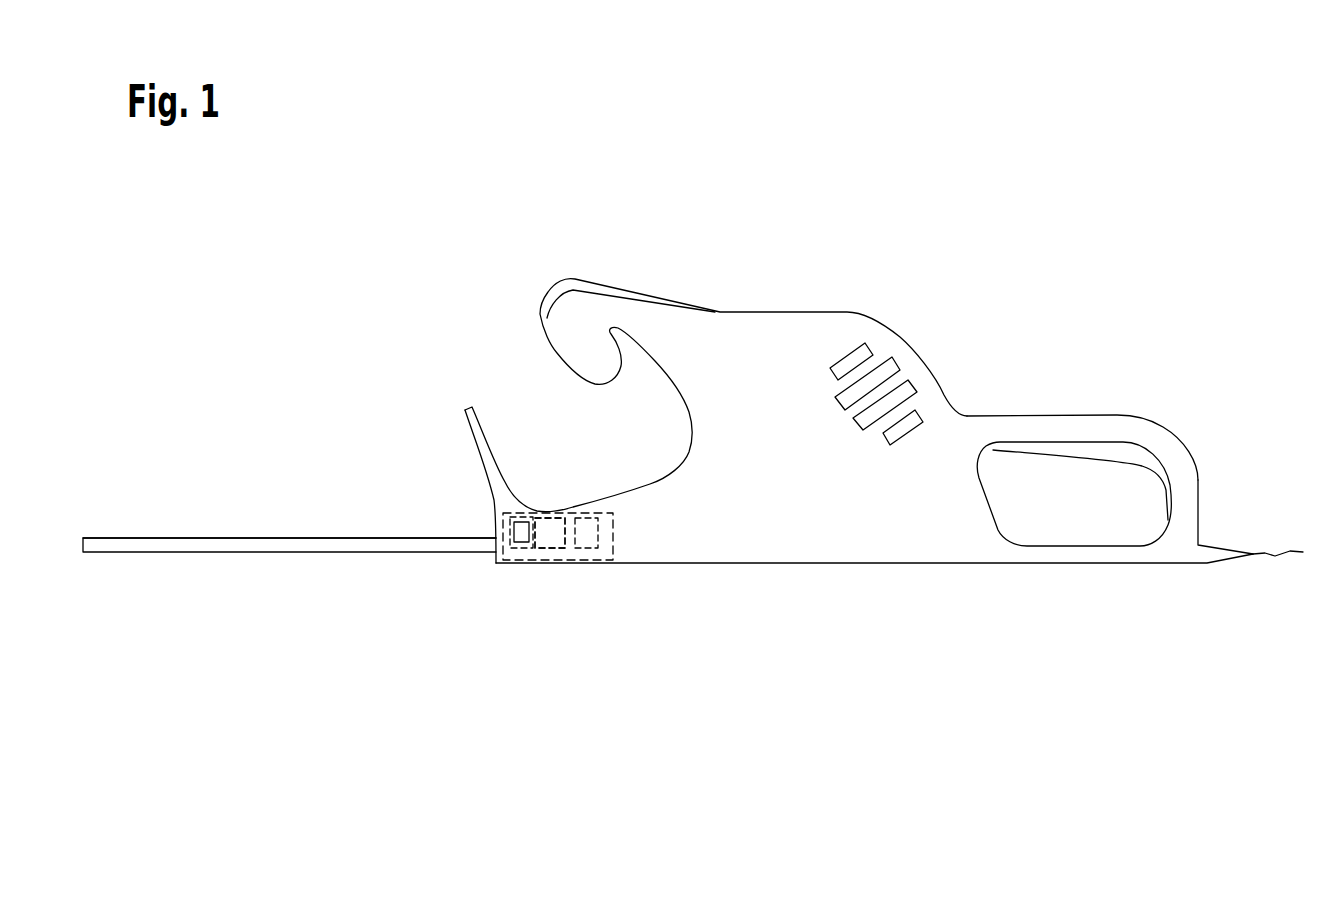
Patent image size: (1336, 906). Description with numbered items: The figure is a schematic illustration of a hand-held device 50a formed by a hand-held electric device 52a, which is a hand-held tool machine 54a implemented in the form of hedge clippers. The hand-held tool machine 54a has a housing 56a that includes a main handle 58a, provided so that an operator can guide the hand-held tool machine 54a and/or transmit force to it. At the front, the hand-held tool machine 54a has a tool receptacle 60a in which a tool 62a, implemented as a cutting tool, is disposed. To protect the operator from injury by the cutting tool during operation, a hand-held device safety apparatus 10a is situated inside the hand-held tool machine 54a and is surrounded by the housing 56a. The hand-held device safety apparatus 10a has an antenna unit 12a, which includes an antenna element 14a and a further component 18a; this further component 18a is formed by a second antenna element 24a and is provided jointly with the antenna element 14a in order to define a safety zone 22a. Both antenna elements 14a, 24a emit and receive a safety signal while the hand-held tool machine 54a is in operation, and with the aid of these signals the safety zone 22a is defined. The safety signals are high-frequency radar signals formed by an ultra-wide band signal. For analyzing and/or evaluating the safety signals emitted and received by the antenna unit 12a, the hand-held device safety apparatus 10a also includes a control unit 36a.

The hand-held device safety apparatus 10a is at (614, 565).
The antenna unit 12a is at (541, 527).
The antenna element 14a is at (515, 567).
The further component 18a is at (517, 512).
The safety zone 22a is at (187, 518).
The antenna element 24a is at (535, 512).
The control unit 36a is at (587, 567).
The hand-held device 50a is at (921, 311).
The hand-held electric device 52a is at (768, 290).
The hand-held tool machine 54a is at (860, 597).
The housing 56a is at (938, 538).
The main handle 58a is at (1155, 465).
The tool receptacle 60a is at (480, 563).
The tool 62a is at (320, 540).